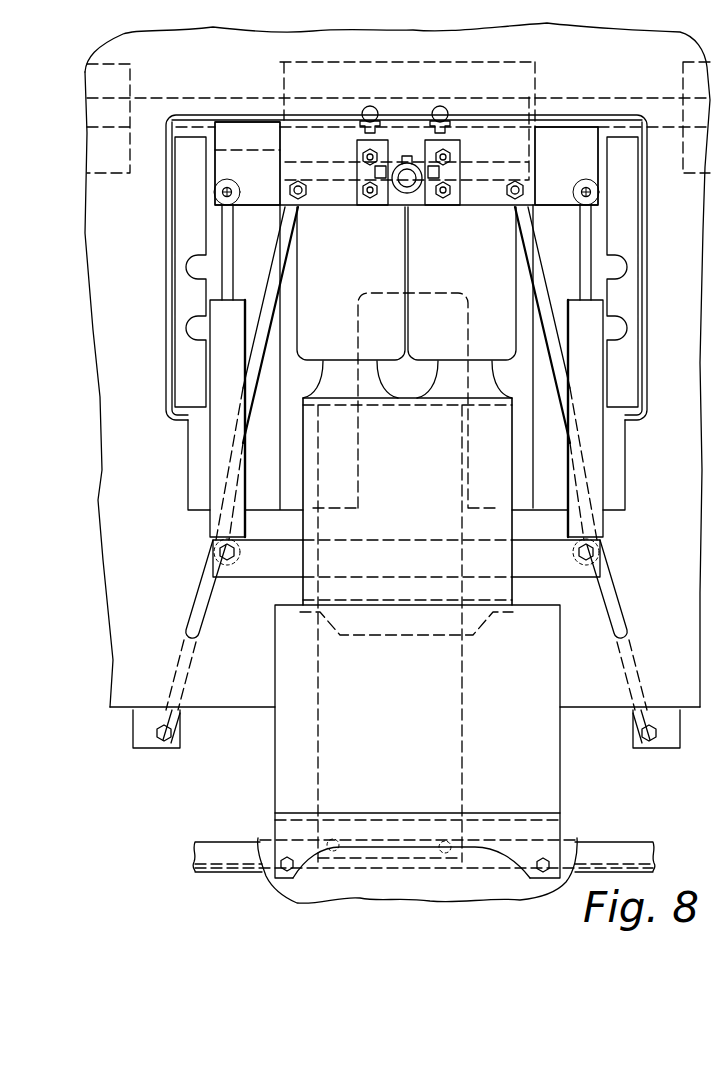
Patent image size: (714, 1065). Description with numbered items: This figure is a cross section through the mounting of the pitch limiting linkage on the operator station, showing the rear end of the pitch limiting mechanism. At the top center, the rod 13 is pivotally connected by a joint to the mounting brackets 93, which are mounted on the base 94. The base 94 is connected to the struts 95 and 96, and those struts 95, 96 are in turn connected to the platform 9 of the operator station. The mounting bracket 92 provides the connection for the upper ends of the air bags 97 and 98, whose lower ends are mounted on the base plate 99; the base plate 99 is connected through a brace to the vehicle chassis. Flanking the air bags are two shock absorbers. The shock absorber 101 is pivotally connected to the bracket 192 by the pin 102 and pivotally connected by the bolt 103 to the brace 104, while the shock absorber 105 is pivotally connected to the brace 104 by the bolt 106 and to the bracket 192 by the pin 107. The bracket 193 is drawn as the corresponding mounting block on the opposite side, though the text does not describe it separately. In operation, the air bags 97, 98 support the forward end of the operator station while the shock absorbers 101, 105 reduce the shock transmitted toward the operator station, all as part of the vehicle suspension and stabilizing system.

The platform 9 is at (240, 708).
The rod 13 is at (407, 190).
The mounting bracket 92 is at (466, 101).
The mounting brackets 93 is at (447, 142).
The base 94 is at (484, 198).
The strut 95 is at (283, 232).
The strut 96 is at (530, 232).
The air bag 97 is at (303, 264).
The air bag 98 is at (508, 273).
The base plate 99 is at (505, 526).
The shock absorber 101 is at (597, 443).
The pin 102 is at (591, 193).
The bolt 103 is at (597, 553).
The brace 104 is at (565, 570).
The shock absorber 105 is at (213, 440).
The bolt 106 is at (223, 557).
The pin 107 is at (222, 193).
The bracket 192 is at (563, 152).
The left mounting block 193 is at (247, 152).